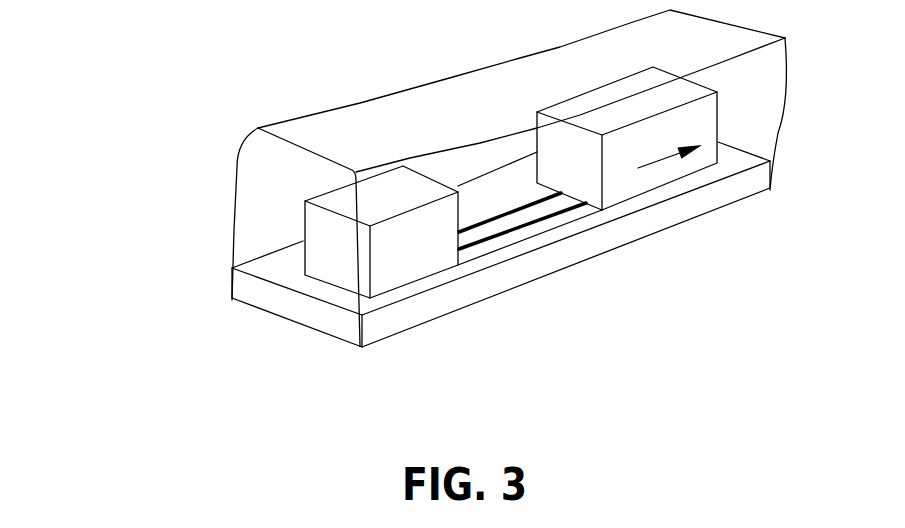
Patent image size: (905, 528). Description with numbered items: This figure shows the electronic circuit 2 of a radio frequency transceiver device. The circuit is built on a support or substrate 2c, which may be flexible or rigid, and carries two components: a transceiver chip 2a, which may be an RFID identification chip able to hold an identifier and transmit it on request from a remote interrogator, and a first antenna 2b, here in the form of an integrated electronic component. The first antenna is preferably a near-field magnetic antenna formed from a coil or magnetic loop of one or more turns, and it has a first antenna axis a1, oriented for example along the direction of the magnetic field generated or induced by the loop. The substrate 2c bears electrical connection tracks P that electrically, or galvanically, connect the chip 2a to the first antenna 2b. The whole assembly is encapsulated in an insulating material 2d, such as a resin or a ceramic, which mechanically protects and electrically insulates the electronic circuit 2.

The electronic circuit 2 is at (166, 185).
The transceiver chip 2a is at (403, 272).
The first antenna 2b is at (670, 173).
The substrate 2c is at (543, 262).
The insulating material 2d is at (262, 148).
The electrical connection tracks P is at (473, 237).
The first antenna axis a1 is at (670, 148).